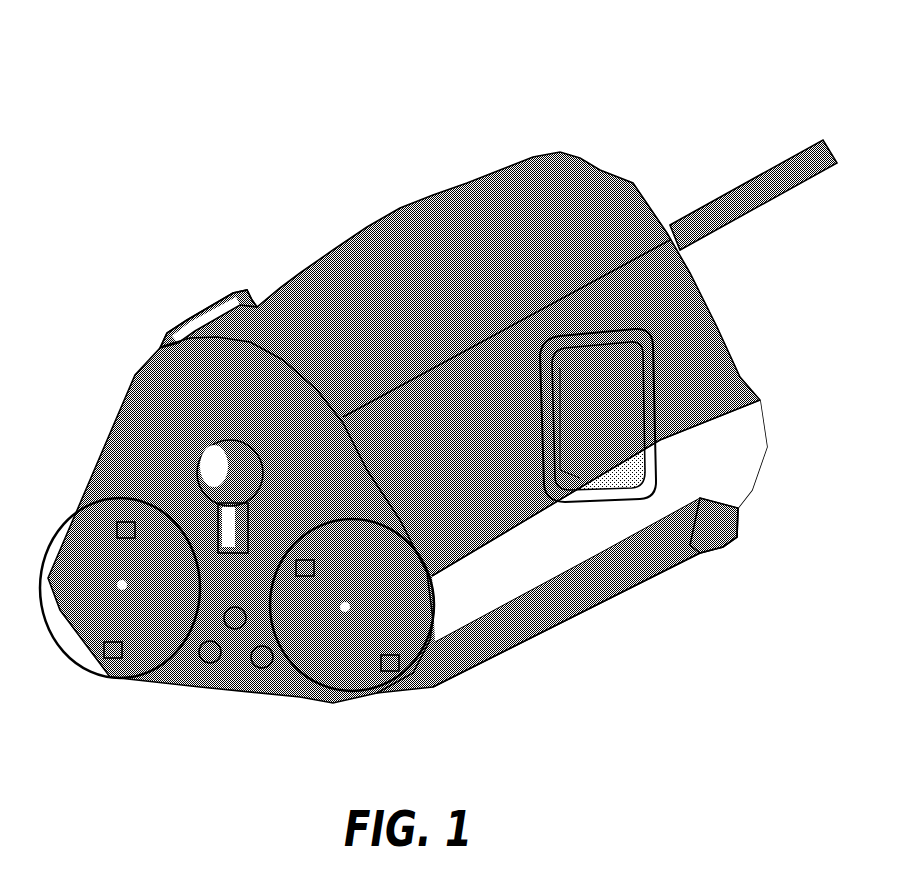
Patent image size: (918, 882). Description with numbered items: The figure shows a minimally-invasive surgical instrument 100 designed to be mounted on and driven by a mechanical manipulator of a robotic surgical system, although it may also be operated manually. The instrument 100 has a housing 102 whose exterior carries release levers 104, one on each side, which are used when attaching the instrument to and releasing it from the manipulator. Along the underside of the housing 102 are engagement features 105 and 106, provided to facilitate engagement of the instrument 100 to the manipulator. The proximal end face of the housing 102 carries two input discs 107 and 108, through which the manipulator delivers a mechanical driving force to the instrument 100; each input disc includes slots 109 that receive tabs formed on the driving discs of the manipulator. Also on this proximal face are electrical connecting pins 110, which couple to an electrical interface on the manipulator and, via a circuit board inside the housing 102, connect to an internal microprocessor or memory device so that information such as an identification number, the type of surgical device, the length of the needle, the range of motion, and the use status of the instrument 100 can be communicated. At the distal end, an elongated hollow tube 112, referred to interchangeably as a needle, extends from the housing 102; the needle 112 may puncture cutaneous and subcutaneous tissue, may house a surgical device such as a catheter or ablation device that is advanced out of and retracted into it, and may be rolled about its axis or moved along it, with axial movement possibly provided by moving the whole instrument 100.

The instrument 100 is at (27, 53).
The housing 102 is at (415, 237).
The release levers 104 is at (220, 313).
The engagement feature 105 is at (437, 607).
The engagement feature 106 is at (650, 587).
The input disc 107 is at (263, 668).
The input disc 108 is at (343, 650).
The slots 109 is at (120, 538).
The electrical connecting pins 110 is at (207, 663).
The elongated hollow tube 112 is at (768, 172).